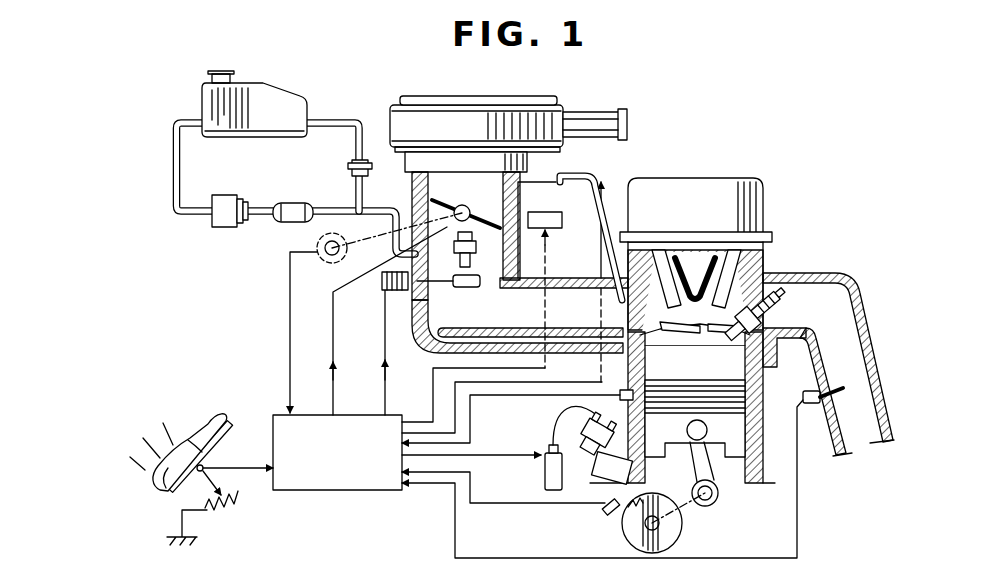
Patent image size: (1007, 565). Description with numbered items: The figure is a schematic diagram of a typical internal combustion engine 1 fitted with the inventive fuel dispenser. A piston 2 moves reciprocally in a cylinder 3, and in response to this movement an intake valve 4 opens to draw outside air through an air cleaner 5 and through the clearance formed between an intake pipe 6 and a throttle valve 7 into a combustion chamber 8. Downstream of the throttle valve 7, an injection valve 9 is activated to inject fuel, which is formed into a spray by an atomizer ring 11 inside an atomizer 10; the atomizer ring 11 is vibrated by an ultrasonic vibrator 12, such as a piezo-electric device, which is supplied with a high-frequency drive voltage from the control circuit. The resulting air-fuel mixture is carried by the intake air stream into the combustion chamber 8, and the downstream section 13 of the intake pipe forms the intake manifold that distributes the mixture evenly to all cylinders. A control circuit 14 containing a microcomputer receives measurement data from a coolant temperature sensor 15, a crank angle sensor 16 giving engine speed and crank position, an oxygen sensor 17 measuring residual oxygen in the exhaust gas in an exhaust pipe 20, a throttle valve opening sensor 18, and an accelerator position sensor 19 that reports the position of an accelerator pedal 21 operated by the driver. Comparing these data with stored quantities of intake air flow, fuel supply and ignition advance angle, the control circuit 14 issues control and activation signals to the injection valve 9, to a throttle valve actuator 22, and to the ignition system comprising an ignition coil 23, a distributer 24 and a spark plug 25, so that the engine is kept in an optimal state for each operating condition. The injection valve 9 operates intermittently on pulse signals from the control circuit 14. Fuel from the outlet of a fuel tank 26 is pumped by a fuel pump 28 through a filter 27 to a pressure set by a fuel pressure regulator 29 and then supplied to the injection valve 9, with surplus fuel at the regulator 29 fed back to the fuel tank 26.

The engine 1 is at (775, 258).
The piston 2 is at (682, 497).
The cylinder 3 is at (768, 362).
The intake valve 4 is at (670, 322).
The air cleaner 5 is at (415, 115).
The intake pipe 6 is at (413, 197).
The throttle valve 7 is at (480, 217).
The combustion chamber 8 is at (702, 370).
The injection valve 9 is at (476, 249).
The atomizer 10 is at (406, 300).
The atomizer ring 11 is at (478, 287).
The ultrasonic vibrator 12 is at (384, 284).
The downstream section of the intake pipe 13 is at (568, 280).
The control circuit 14 is at (337, 491).
The coolant temperature sensor 15 is at (626, 391).
The crank angle sensor 16 is at (615, 511).
The oxygen sensor 17 is at (803, 397).
The throttle valve opening sensor 18 is at (330, 266).
The accelerator position sensor 19 is at (227, 480).
The exhaust pipe 20 is at (866, 315).
The accelerator pedal 21 is at (228, 428).
The throttle valve actuator 22 is at (558, 211).
The ignition coil 23 is at (545, 477).
The distributer 24 is at (588, 450).
The spark plug 25 is at (785, 298).
The fuel tank 26 is at (260, 95).
The filter 27 is at (220, 200).
The fuel pump 28 is at (292, 205).
The fuel pressure regulator 29 is at (350, 168).